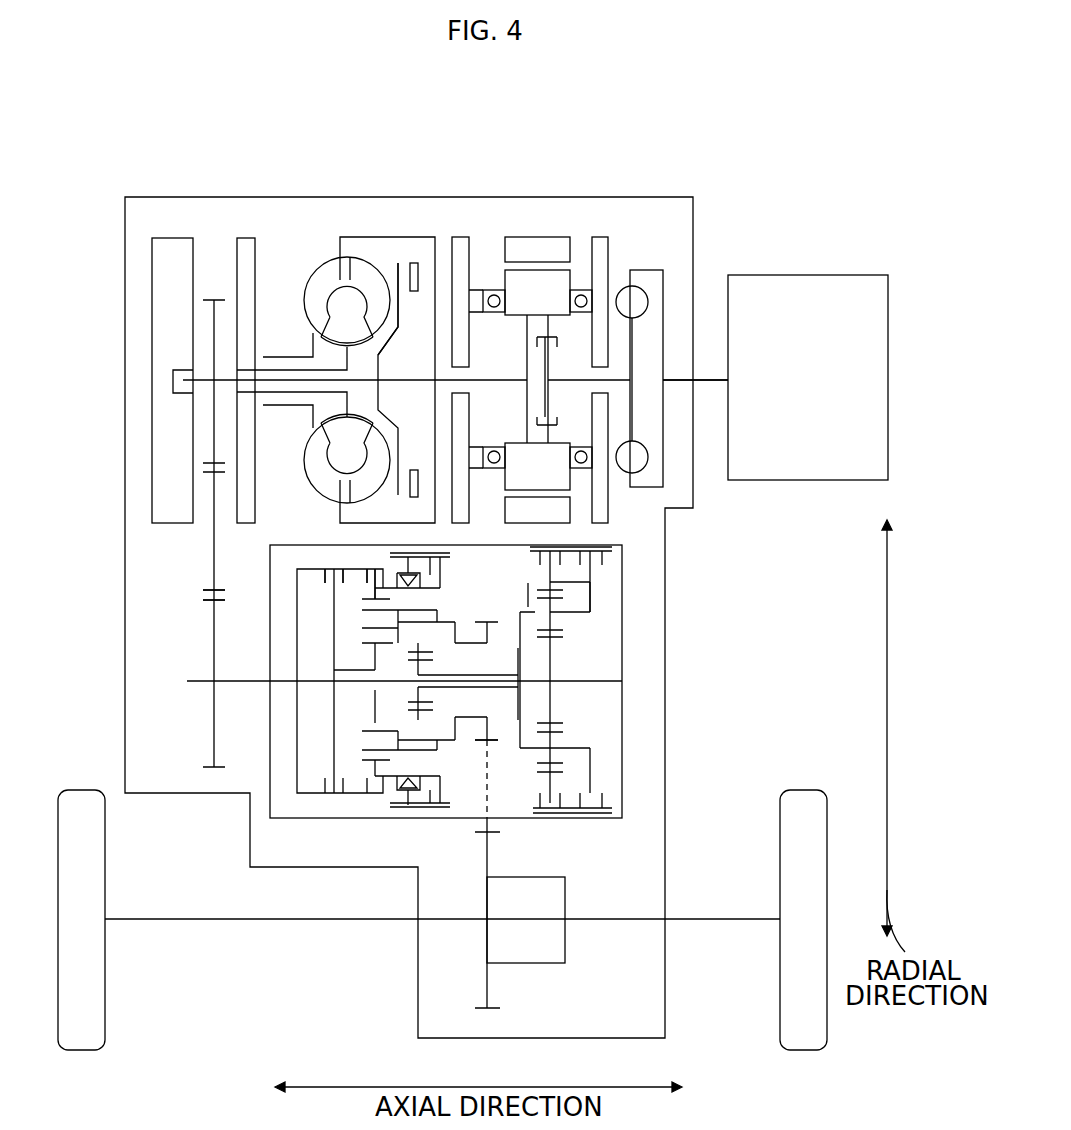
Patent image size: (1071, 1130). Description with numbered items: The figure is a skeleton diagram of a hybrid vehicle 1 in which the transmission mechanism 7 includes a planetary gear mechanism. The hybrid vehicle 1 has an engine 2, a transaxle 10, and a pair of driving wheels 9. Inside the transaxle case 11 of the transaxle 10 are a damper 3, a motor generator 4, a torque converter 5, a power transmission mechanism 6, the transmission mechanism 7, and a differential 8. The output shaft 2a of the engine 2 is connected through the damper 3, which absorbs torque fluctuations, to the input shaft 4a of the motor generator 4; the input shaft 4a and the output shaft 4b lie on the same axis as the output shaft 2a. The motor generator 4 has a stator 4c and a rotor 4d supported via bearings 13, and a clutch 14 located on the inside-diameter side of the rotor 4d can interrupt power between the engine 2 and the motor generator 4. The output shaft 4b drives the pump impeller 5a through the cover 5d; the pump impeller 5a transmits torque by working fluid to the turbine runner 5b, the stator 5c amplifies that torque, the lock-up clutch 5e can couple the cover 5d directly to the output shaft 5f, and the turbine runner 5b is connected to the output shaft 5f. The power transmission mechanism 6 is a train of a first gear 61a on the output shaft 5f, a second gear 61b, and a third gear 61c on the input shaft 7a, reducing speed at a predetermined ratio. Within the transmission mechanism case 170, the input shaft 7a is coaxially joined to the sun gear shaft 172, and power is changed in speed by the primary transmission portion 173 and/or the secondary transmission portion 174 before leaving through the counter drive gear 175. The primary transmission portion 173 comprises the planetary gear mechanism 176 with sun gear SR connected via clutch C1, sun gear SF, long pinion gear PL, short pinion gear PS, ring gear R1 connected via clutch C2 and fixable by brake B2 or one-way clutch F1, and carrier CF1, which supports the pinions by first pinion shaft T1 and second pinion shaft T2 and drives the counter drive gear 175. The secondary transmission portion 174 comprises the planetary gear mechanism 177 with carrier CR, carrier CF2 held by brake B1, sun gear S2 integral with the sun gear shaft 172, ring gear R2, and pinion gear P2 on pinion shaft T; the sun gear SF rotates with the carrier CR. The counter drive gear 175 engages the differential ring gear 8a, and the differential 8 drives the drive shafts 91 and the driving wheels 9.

The hybrid vehicle 1 is at (703, 112).
The transaxle 10 is at (613, 160).
The transaxle case 11 is at (693, 225).
The engine 2 is at (815, 275).
The output shaft 2a is at (680, 380).
The damper 3 is at (641, 270).
The motor generator 4 is at (530, 334).
The input shaft 4a is at (575, 380).
The output shaft 4b is at (497, 380).
The stator 4c is at (520, 237).
The rotor 4d is at (503, 475).
The bearings 13 is at (578, 447).
The clutch 14 is at (537, 417).
The torque converter 5 is at (330, 248).
The pump impeller 5a is at (317, 263).
The turbine runner 5b is at (367, 262).
The stator 5c is at (333, 337).
The cover 5d is at (350, 240).
The lock-up clutch 5e is at (417, 258).
The output shaft 5f is at (285, 380).
The power transmission mechanism 6 is at (213, 240).
The first gear 61a is at (220, 300).
The second gear 61b is at (213, 592).
The third gear 61c is at (210, 603).
The transmission mechanism 7 is at (472, 597).
The input shaft 7a is at (240, 683).
The transmission mechanism case 170 is at (622, 690).
The sun gear shaft 172 is at (592, 683).
The primary transmission portion 173 is at (290, 555).
The secondary transmission portion 174 is at (602, 578).
The counter drive gear 175 is at (487, 742).
The planetary gear mechanism 176 is at (447, 590).
The planetary gear mechanism 177 is at (592, 613).
The brake B1 is at (603, 560).
The brake B2 is at (437, 490).
The clutch C1 is at (325, 580).
The clutch C2 is at (362, 577).
The one-way clutch F1 is at (405, 572).
The ring gear R1 is at (370, 600).
The ring gear R2 is at (557, 583).
The long pinion gear PL is at (372, 615).
The sun gear SR is at (375, 643).
The first pinion shaft T1 is at (445, 645).
The second pinion shaft T2 is at (422, 620).
The pinion shaft T is at (522, 582).
The carrier CF1 is at (470, 620).
The carrier CF2 is at (592, 597).
The pinion gear P2 is at (537, 630).
The sun gear S2 is at (553, 638).
The short pinion gear PS is at (410, 647).
The sun gear SF is at (420, 660).
The carrier CR is at (518, 650).
The differential 8 is at (567, 897).
The differential ring gear 8a is at (478, 832).
The driving wheels 9 is at (88, 790).
The drive shafts 91 is at (235, 920).